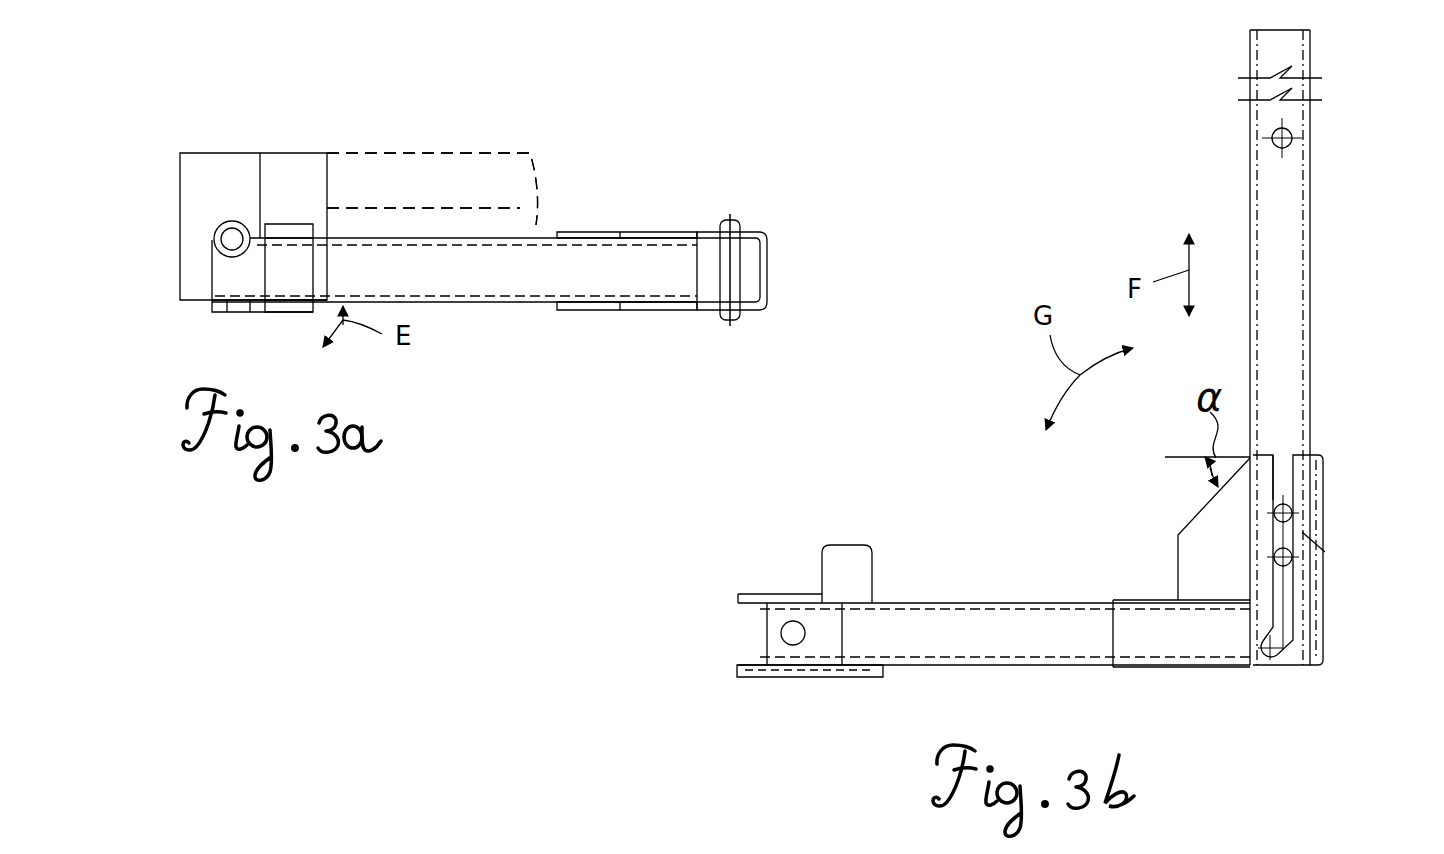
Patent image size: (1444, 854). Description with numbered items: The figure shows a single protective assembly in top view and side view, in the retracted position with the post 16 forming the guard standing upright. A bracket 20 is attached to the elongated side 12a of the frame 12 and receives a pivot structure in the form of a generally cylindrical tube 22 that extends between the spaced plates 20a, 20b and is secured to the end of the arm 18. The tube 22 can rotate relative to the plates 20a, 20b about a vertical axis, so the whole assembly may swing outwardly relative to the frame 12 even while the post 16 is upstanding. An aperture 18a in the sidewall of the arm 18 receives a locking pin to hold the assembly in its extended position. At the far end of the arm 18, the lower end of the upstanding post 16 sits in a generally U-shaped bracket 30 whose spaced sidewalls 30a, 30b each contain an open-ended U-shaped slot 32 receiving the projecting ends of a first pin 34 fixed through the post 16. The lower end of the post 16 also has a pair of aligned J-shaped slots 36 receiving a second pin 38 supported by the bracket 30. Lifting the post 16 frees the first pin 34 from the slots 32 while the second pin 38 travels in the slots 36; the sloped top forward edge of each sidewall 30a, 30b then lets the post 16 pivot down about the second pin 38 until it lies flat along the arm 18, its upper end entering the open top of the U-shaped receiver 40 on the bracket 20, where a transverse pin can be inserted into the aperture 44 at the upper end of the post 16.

In FIG. 3A, the frame 12 is at (453, 162).
In FIG. 3A, the elongated side 12a is at (453, 162).
In FIG. 3B, the upstanding post 16 is at (1310, 232).
In FIG. 3B, the arm 18 is at (913, 603).
In FIG. 3B, the aperture 18a is at (802, 644).
In FIG. 3B, the bracket 20 is at (758, 594).
In FIG. 3A, the spaced plate 20a is at (188, 245).
In FIG. 3B, the spaced plate 20a is at (738, 598).
In FIG. 3B, the spaced plate 20b is at (752, 678).
In FIG. 3A, the cylindrical tube 22 is at (240, 218).
In FIG. 3A, the U-shaped bracket 30 is at (770, 240).
In FIG. 3B, the U-shaped bracket 30 is at (1324, 529).
In FIG. 3A, the sidewall 30a is at (645, 232).
In FIG. 3B, the sidewall 30a is at (1217, 573).
In FIG. 3A, the sidewall 30b is at (641, 312).
In FIG. 3A, the U-shaped slot 32 is at (718, 214).
In FIG. 3B, the U-shaped slot 32 is at (1275, 463).
In FIG. 3A, the first pin 34 is at (742, 222).
In FIG. 3B, the first pin 34 is at (1290, 507).
In FIG. 3B, the aligned slots 36 is at (1290, 645).
In FIG. 3B, the second pin 38 is at (1290, 566).
In FIG. 3A, the U-shaped receiver 40 is at (293, 228).
In FIG. 3B, the U-shaped receiver 40 is at (852, 545).
In FIG. 3B, the aperture 44 is at (1293, 138).